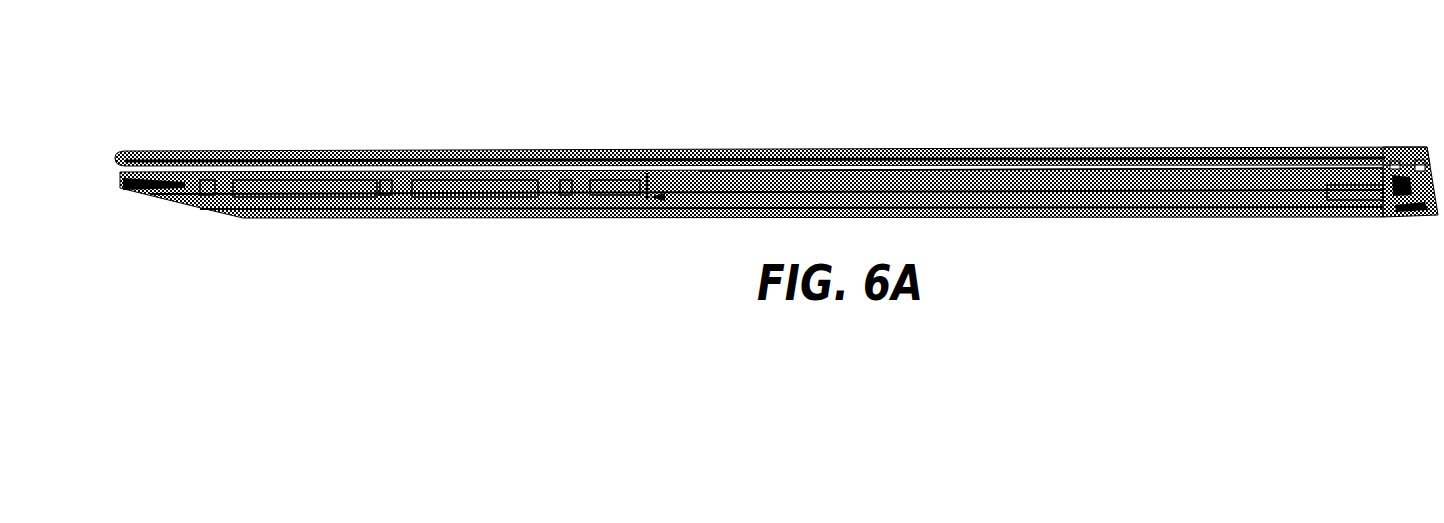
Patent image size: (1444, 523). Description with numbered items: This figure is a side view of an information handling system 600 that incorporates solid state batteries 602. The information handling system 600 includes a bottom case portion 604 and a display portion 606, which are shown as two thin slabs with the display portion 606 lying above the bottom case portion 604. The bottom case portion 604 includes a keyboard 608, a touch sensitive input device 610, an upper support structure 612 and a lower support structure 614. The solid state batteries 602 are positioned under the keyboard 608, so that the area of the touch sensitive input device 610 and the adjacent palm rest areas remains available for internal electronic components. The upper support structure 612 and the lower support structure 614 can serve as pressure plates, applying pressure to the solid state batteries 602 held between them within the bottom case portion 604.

The information handling system 600 is at (1032, 100).
The solid state batteries 602 is at (963, 203).
The bottom case portion 604 is at (198, 207).
The display portion 606 is at (718, 153).
The keyboard 608 is at (1077, 170).
The touch sensitive input device 610 is at (475, 173).
The upper support structure 612 is at (645, 175).
The lower support structure 614 is at (393, 212).